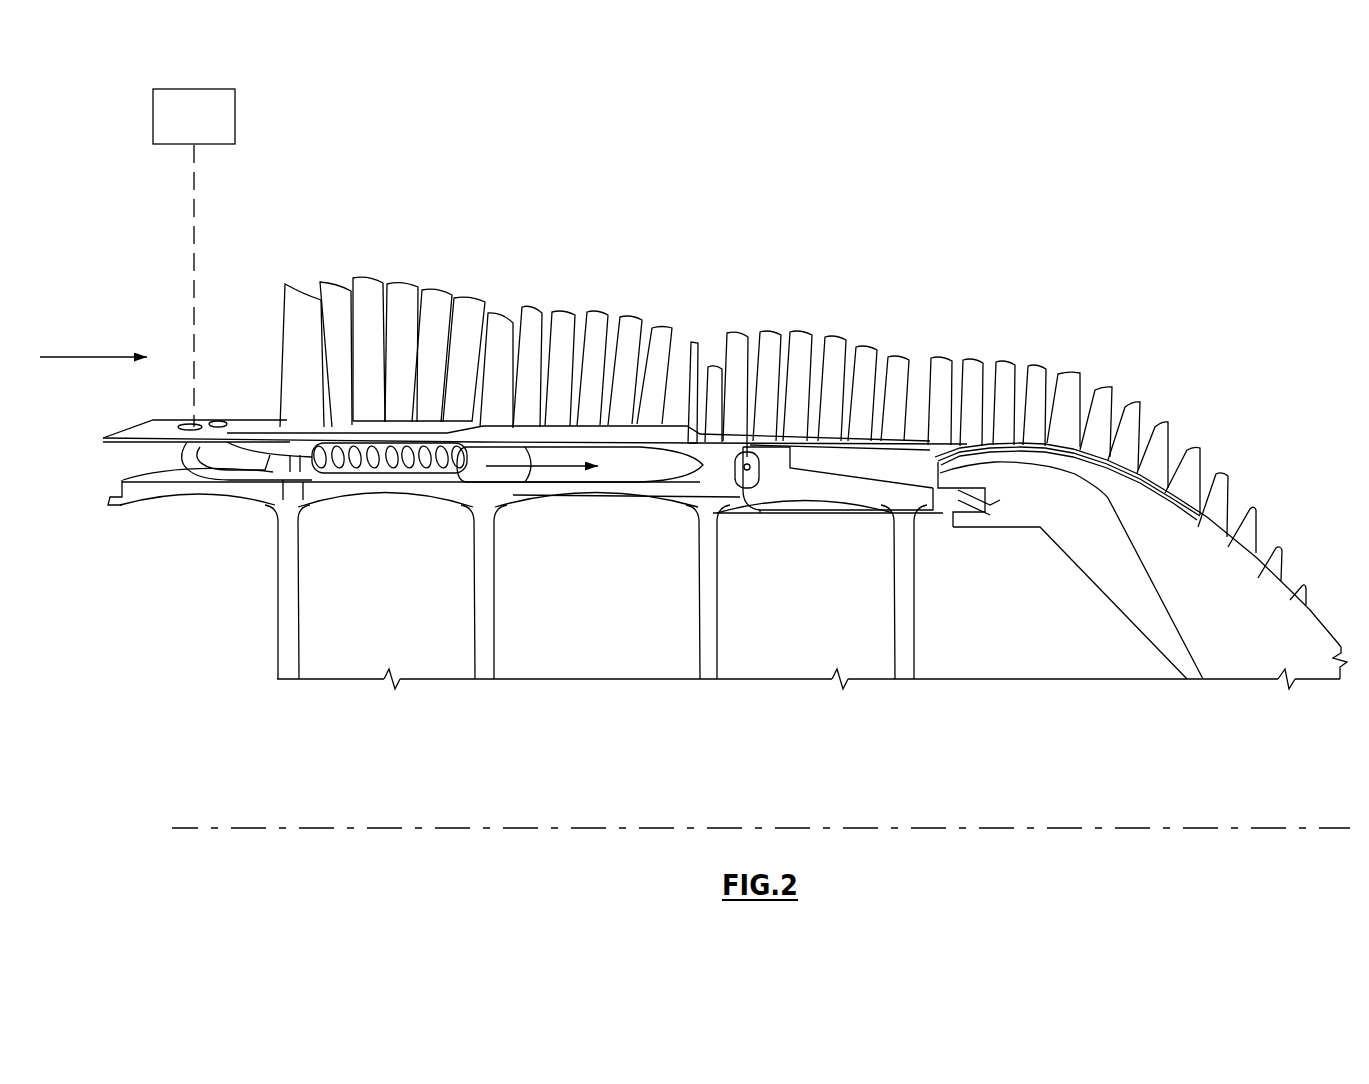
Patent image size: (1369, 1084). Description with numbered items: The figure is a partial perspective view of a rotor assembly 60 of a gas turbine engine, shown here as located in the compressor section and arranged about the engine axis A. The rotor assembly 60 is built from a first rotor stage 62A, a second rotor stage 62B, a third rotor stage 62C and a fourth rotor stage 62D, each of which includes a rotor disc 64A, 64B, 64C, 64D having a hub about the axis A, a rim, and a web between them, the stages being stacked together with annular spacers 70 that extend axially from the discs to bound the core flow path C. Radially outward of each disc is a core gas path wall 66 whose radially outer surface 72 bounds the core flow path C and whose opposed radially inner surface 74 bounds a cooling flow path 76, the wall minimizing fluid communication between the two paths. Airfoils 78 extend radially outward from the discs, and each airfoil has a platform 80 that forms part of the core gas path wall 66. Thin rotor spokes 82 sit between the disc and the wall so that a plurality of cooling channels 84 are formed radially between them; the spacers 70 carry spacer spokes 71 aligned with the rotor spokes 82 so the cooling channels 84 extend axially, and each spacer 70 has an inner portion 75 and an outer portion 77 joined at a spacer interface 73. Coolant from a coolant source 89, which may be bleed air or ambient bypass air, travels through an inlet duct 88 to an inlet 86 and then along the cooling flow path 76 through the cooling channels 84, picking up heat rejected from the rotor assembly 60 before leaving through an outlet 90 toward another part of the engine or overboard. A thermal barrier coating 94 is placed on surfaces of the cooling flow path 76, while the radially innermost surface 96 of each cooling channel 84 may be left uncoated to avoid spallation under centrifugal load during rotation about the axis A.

The rotor assembly 60 is at (1041, 173).
The first rotor stage 62A is at (353, 319).
The second rotor stage 62B is at (604, 386).
The third rotor stage 62C is at (622, 366).
The fourth rotor stage 62D is at (1020, 287).
The rotor disc 64A is at (272, 641).
The rotor disc 64B is at (470, 641).
The rotor disc 64C is at (695, 641).
The rotor disc 64D is at (893, 641).
The core gas path wall 66 is at (263, 427).
The spacer 70 is at (590, 432).
The spacer spoke 71 is at (621, 445).
The radially outer surface 72 is at (388, 432).
The spacer interface 73 is at (813, 470).
The radially inner surface 74 is at (405, 482).
The inner portion 75 is at (812, 500).
The cooling flow path 76 is at (562, 470).
The outer portion 77 is at (900, 488).
The airfoil 78 is at (288, 296).
The platform 80 is at (293, 440).
The rotor spoke 82 is at (318, 492).
The cooling channel 84 is at (270, 485).
The inlet 86 is at (150, 425).
The inlet duct 88 is at (222, 476).
The coolant source 89 is at (236, 118).
The outlet 90 is at (975, 478).
The thermal barrier coating 94 is at (300, 456).
The radially innermost surface 96 is at (292, 500).
The core flow path C is at (92, 362).
The axis A is at (1205, 828).